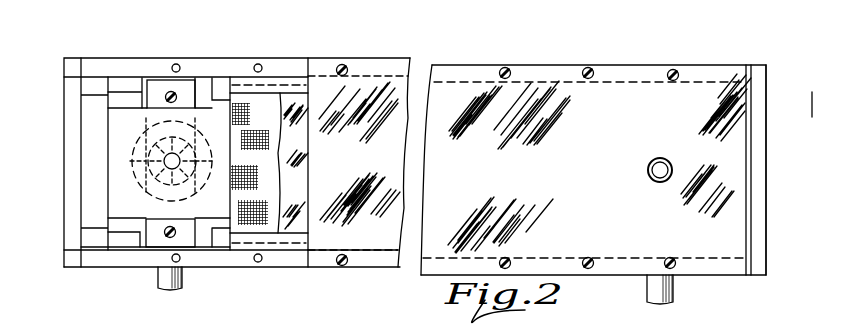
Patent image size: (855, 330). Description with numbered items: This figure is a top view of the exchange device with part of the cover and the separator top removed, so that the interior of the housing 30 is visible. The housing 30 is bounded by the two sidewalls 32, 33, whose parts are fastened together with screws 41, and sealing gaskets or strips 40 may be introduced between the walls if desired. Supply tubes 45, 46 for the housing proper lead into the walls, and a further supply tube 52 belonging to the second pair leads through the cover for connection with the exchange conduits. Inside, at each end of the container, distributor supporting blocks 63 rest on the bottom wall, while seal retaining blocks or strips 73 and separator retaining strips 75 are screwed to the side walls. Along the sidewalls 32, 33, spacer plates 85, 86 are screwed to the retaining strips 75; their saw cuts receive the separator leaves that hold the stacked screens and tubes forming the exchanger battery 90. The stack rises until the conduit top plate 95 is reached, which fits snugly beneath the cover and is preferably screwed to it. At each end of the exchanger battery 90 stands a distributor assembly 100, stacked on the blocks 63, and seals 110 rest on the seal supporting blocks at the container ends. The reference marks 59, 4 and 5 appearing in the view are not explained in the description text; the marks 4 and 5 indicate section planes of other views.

The housing 30 is at (466, 26).
The sidewall 32 is at (290, 61).
The sidewall 33 is at (272, 265).
The sealing gasket 40 is at (746, 275).
The screws 41 is at (585, 69).
The supply tube 45 is at (165, 286).
The supply tube 46 is at (673, 292).
The supply tube 52 is at (648, 169).
The dashed edge line 59 is at (638, 89).
The distributor supporting block 63 is at (234, 0).
The seal retaining block 73 is at (123, 88).
The separator retaining strip 75 is at (218, 88).
The spacer plate 85 is at (247, 246).
The spacer plate 86 is at (278, 86).
The exchanger battery 90 is at (262, 190).
The conduit top plate 95 is at (293, 137).
The distributor assembly 100 is at (138, 163).
The seal 110 is at (100, 195).
The section line 4 is at (272, 20).
The section line 5 is at (118, 33).